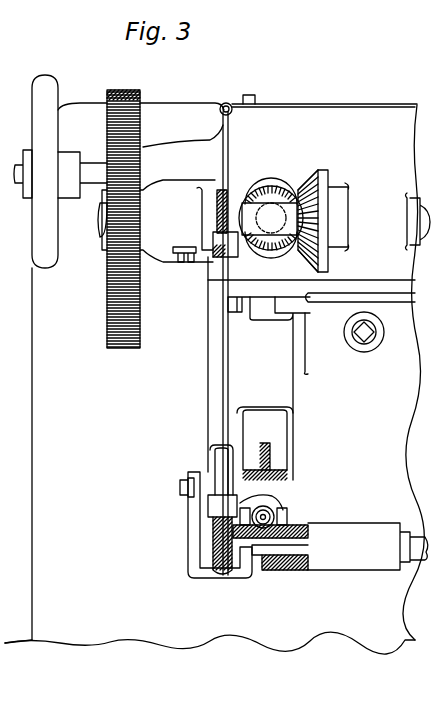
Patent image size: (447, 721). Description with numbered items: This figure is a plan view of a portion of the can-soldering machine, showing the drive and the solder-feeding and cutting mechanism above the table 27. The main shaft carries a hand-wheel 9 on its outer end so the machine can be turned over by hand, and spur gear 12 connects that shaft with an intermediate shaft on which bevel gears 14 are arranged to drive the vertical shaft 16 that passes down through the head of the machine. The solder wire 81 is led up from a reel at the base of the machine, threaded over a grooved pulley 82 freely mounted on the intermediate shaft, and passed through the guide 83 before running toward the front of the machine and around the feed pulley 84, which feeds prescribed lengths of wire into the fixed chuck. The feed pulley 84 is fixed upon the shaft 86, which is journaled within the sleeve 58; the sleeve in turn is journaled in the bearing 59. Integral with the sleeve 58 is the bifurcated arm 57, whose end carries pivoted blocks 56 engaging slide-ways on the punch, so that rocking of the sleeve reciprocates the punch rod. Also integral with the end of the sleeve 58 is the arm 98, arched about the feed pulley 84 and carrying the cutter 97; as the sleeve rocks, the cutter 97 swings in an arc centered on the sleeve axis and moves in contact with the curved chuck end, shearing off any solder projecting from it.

The hand-wheel 9 is at (40, 220).
The spur gear 12 is at (107, 290).
The bevel gears 14 is at (335, 163).
The vertical shaft 16 is at (271, 210).
The table 27 is at (54, 537).
The blocks 56 is at (283, 524).
The bifurcated arm 57 is at (283, 513).
The sleeve 58 is at (298, 562).
The bearing 59 is at (368, 546).
The wire 81 is at (222, 347).
The grooved pulley 82 is at (218, 213).
The guide 83 is at (218, 255).
The feed pulley 84 is at (215, 550).
The shaft 86 is at (281, 548).
The cutter 97 is at (180, 487).
The arm 98 is at (188, 521).